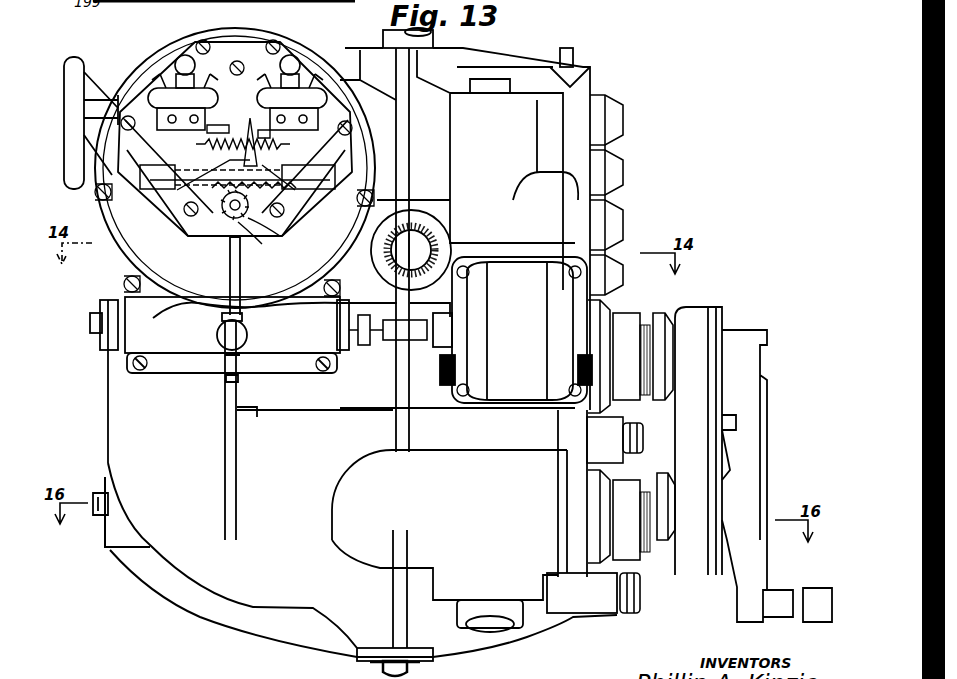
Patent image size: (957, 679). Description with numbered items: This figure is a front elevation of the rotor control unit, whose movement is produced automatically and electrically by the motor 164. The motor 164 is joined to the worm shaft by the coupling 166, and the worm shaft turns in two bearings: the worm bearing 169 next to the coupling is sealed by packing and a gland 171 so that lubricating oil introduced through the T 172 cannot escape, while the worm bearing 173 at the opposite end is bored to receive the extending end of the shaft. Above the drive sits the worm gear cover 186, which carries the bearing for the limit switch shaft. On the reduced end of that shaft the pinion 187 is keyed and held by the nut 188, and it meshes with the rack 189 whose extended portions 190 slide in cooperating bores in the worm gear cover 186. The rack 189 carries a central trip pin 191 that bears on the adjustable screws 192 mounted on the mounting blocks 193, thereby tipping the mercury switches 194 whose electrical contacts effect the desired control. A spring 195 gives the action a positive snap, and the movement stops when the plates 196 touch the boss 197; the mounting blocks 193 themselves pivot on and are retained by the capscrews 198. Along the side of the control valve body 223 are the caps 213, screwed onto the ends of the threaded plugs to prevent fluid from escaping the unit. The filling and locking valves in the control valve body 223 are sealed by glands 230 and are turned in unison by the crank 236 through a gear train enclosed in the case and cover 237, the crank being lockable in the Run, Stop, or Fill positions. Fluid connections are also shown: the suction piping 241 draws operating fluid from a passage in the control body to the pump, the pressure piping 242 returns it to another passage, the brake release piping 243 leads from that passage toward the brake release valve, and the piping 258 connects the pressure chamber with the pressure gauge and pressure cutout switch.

The motor 164 is at (530, 318).
The coupling 166 is at (396, 368).
The worm bearing 169 is at (338, 372).
The gland 171 is at (375, 340).
The T 172 is at (222, 345).
The worm bearing 173 is at (100, 318).
The worm gear cover 186 is at (258, 282).
The pinion 187 is at (268, 226).
The nut 188 is at (250, 238).
The rack 189 is at (220, 228).
The extended portions 190 is at (172, 208).
The central trip pin 191 is at (285, 205).
The adjustable screws 192 is at (264, 130).
The mounting blocks 193 is at (150, 93).
The mercury switches 194 is at (212, 124).
The spring 195 is at (210, 180).
The plates 196 is at (210, 140).
The boss 197 is at (205, 213).
The capscrews 198 is at (278, 32).
The caps 213 is at (625, 192).
The control valve body 223 is at (175, 605).
The glands 230 is at (662, 570).
The crank 236 is at (758, 472).
The case and cover 237 is at (726, 307).
The suction piping 241 is at (510, 632).
The pressure piping 242 is at (435, 240).
The brake release piping 243 is at (383, 36).
The piping 258 is at (578, 56).